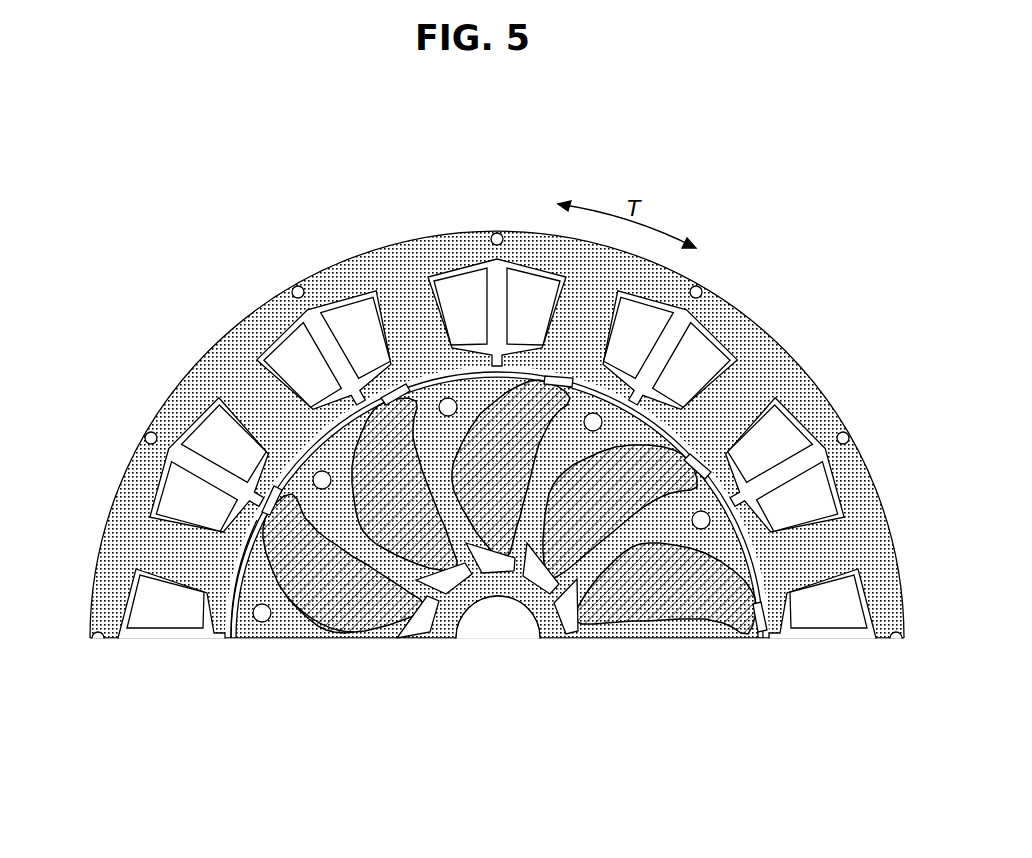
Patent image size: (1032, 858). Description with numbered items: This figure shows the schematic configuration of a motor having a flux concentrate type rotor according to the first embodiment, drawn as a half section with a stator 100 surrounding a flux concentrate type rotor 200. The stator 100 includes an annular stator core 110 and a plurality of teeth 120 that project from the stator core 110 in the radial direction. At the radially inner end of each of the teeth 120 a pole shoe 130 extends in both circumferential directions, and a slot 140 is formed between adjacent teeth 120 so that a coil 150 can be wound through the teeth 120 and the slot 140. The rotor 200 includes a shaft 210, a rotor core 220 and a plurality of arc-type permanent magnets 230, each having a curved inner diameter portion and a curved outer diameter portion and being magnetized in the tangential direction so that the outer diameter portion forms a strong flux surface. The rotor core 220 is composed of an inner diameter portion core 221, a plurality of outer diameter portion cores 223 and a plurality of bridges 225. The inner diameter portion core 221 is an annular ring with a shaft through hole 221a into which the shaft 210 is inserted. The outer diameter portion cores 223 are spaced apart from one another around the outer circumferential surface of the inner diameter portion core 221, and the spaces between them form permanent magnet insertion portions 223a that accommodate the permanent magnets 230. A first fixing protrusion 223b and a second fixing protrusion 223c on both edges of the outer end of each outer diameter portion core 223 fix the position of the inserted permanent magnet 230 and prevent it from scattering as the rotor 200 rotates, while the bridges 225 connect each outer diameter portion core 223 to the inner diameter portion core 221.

The stator 100 is at (497, 415).
The stator core 110 is at (362, 275).
The teeth 120 is at (408, 293).
The pole shoe 130 is at (468, 363).
The slot 140 is at (317, 320).
The coil 150 is at (287, 353).
The flux concentrate type rotor 200 is at (402, 598).
The shaft 210 is at (500, 623).
The rotor core 220 is at (402, 598).
The inner diameter portion core 221 is at (497, 615).
The shaft through hole 221a is at (460, 622).
The outer diameter portion core 223 is at (402, 544).
The permanent magnet insertion portion 223a is at (306, 634).
The first fixing protrusion 223b is at (240, 497).
The second fixing protrusion 223c is at (273, 487).
The bridge 225 is at (575, 628).
The permanent magnet 230 is at (693, 600).